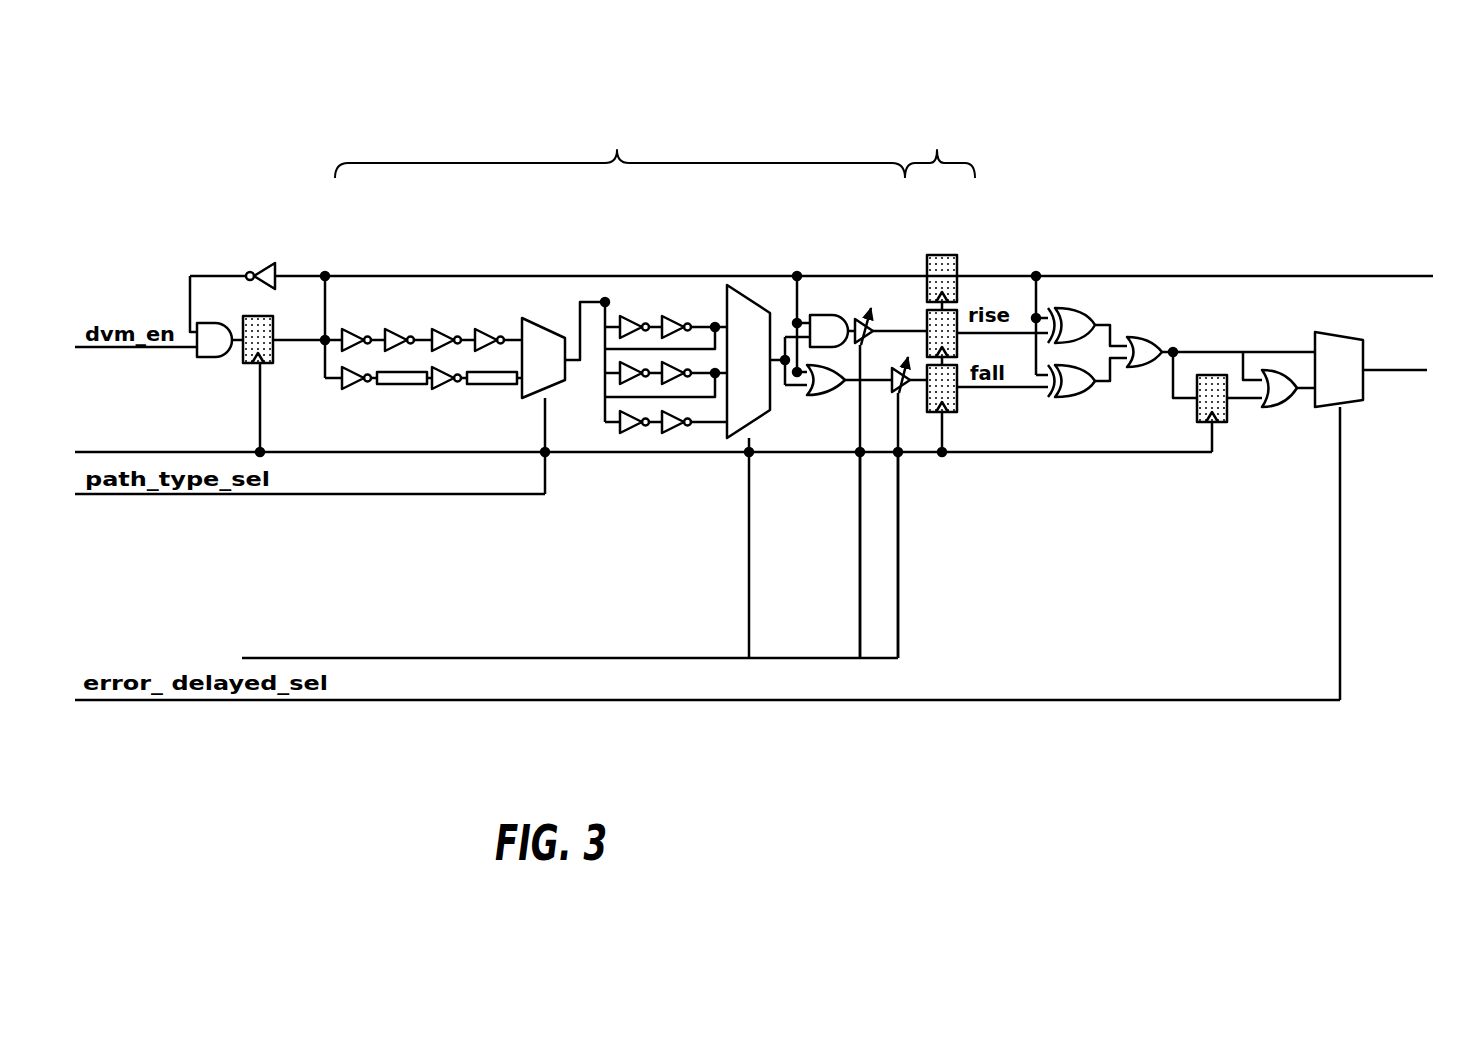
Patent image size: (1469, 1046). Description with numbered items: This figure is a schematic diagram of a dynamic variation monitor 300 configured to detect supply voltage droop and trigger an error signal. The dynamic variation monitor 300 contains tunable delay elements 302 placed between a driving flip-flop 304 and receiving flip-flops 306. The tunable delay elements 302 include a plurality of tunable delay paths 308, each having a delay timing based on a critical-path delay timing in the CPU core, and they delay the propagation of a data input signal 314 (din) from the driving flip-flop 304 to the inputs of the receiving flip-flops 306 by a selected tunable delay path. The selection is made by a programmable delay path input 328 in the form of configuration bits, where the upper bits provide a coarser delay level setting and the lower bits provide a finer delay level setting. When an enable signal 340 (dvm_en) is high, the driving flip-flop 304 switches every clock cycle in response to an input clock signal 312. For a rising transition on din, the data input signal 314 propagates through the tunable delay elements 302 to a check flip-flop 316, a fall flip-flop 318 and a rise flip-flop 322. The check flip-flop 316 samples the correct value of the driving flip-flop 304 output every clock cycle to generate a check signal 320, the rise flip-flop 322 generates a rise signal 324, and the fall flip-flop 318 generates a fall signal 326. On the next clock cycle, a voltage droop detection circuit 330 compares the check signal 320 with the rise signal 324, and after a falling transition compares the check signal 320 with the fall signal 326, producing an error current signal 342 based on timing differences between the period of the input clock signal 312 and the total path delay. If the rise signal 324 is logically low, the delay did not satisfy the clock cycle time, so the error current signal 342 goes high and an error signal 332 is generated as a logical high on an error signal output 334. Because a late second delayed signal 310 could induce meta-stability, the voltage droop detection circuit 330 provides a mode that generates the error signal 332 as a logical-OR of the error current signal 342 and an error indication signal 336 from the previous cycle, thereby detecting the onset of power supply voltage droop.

The dynamic variation monitor 300 is at (370, 120).
The tunable delay elements 302 is at (620, 143).
The driving flip-flop 304 is at (247, 314).
The receiving flip-flops 306 is at (940, 143).
The tunable delay paths 308 is at (573, 379).
The second delayed signal 310 is at (797, 272).
The input clock signal 312 is at (192, 441).
The data input signal 314 is at (309, 303).
The check flip-flop 316 is at (944, 254).
The fall flip-flop 318 is at (962, 416).
The check signal 320 is at (1330, 276).
The rise flip-flop 322 is at (922, 306).
The rise signal 324 is at (1019, 329).
The fall signal 326 is at (1024, 389).
The programmable delay path input 328 is at (157, 622).
The voltage droop detection circuit 330 is at (1117, 368).
The error signal 332 is at (1390, 338).
The error signal output 334 is at (1367, 372).
The error indication signal 336 is at (1305, 392).
The enable signal 340 is at (186, 332).
The error current signal 342 is at (1202, 346).